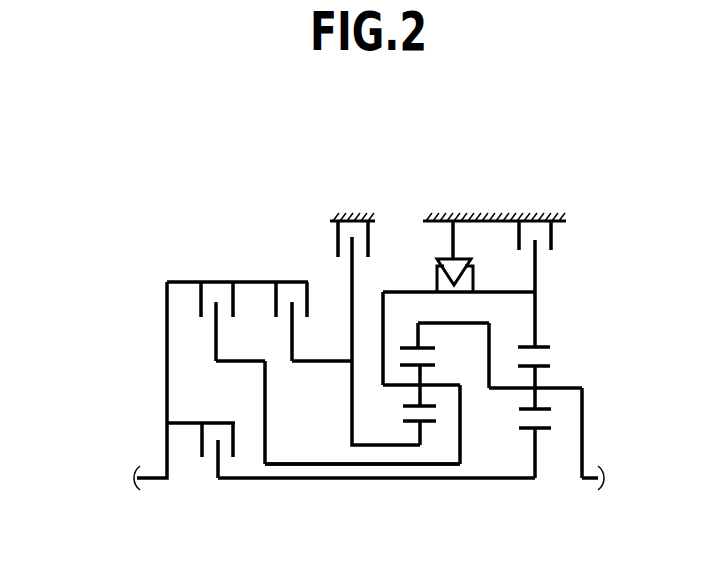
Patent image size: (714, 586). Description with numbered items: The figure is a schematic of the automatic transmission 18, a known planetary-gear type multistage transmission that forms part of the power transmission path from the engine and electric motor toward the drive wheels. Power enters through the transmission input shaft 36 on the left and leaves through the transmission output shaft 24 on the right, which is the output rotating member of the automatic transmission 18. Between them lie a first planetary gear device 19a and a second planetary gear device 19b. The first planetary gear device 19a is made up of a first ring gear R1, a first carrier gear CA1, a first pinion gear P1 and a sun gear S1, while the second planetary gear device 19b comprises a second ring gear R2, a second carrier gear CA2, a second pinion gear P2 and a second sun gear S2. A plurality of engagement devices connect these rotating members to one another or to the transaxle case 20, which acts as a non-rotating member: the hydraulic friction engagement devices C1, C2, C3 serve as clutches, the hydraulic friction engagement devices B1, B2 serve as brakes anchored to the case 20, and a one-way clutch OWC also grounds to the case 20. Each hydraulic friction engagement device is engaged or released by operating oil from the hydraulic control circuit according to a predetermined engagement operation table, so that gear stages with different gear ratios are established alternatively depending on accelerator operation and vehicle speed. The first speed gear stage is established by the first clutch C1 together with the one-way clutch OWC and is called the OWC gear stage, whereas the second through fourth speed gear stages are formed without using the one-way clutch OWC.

The automatic transmission 18 is at (397, 150).
The transaxle case 20 is at (364, 216).
The hydraulic friction engagement device (brake) B1 is at (368, 260).
The hydraulic friction engagement device (brake) B2 is at (551, 256).
The one-way clutch OWC is at (470, 256).
The first clutch C1 is at (201, 437).
The hydraulic friction engagement device (clutch) C2 is at (237, 308).
The hydraulic friction engagement device (clutch) C3 is at (291, 308).
The first ring gear R1 is at (411, 346).
The first pinion gear P1 is at (427, 409).
The sun gear S1 is at (407, 423).
The first carrier gear CA1 is at (427, 385).
The second ring gear R2 is at (538, 346).
The second pinion gear P2 is at (521, 409).
The second sun gear S2 is at (531, 430).
The second carrier gear CA2 is at (547, 388).
The first planetary gear device 19a is at (416, 486).
The second planetary gear device 19b is at (534, 486).
The transmission output shaft 24 is at (597, 481).
The transmission input shaft 36 is at (155, 481).